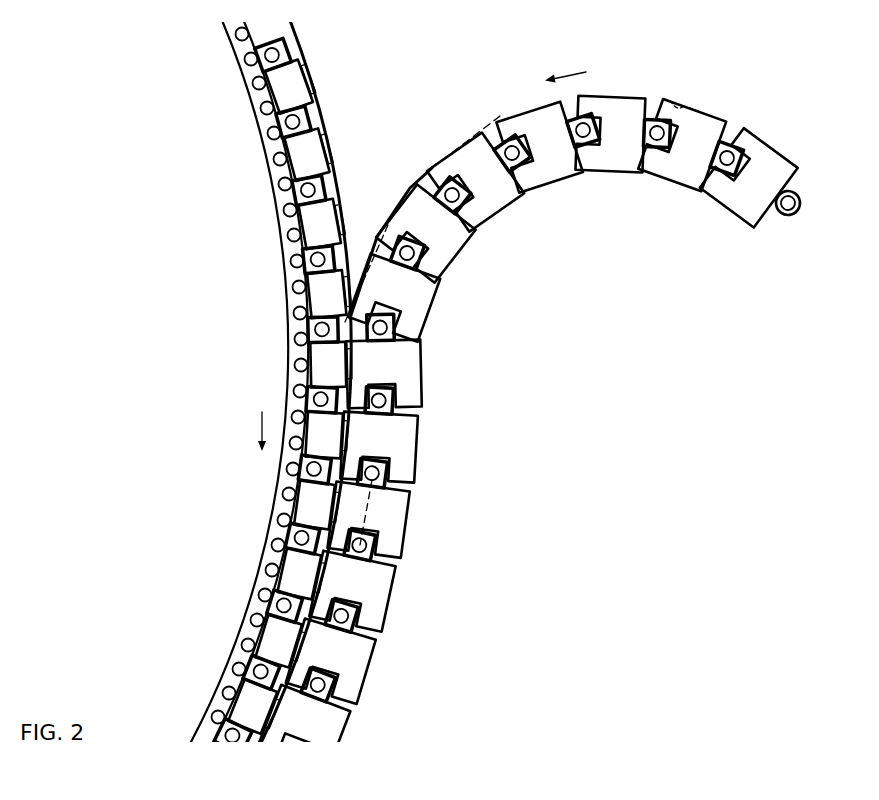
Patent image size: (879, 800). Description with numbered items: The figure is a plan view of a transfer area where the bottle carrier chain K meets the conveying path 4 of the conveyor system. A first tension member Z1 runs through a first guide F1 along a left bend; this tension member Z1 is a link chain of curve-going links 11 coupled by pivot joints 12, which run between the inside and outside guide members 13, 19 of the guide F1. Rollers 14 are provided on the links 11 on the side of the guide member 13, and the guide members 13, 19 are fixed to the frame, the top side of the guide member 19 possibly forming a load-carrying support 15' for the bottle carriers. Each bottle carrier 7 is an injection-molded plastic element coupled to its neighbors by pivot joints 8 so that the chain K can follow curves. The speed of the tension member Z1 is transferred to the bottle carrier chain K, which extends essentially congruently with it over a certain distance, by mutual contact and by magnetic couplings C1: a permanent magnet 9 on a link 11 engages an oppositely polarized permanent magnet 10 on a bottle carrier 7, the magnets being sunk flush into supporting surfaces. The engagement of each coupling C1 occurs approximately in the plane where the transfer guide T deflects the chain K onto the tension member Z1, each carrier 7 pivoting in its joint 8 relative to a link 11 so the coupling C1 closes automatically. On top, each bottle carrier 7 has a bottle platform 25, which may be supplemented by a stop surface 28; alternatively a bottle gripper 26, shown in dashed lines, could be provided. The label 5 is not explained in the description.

The conveying path 4 is at (204, 443).
The branch guide 5 is at (488, 128).
The bottle carrier 7 is at (422, 300).
The pivot joint 8 is at (384, 218).
The permanent magnet 9 is at (265, 111).
The permanent magnet 10 is at (403, 213).
The link 11 is at (300, 505).
The pivot joint 12 is at (258, 602).
The guide member 13 is at (272, 194).
The roller 14 is at (290, 253).
The load-carrying support 15' is at (406, 507).
The guide member 19 is at (266, 106).
The bottle platform 25 is at (681, 170).
The bottle gripper 26 is at (718, 110).
The stop surface 28 is at (673, 95).
The coupling C1 is at (358, 439).
The first guide F1 is at (282, 182).
The bottle carrier chain K is at (609, 178).
The transfer guide T is at (424, 174).
The first tension member Z1 is at (316, 298).